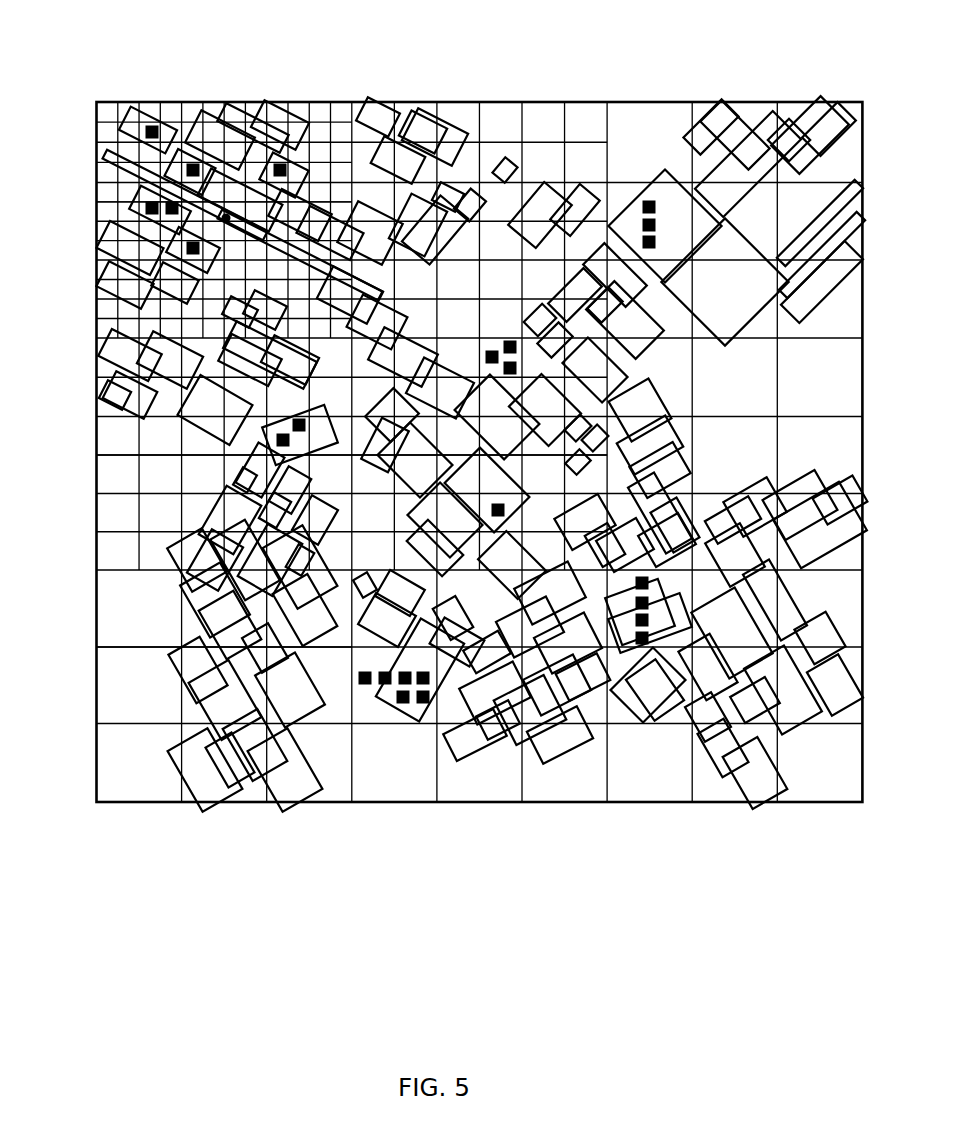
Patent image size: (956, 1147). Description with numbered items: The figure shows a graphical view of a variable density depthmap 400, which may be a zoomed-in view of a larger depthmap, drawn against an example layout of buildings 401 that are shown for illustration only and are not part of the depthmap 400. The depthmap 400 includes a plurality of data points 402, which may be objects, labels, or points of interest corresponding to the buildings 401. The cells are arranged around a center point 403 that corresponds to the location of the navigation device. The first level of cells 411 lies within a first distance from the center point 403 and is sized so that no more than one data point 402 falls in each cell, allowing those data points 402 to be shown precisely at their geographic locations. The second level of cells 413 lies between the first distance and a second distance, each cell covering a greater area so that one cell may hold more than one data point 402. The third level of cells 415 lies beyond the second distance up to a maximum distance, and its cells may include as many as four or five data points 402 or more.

The variable density depthmap 400 is at (348, 54).
The buildings 401 is at (722, 334).
The data points 402 is at (510, 343).
The center point 403 is at (226, 218).
The first level of cells 411 is at (92, 208).
The second level of cells 413 is at (92, 473).
The third level of cells 415 is at (92, 673).